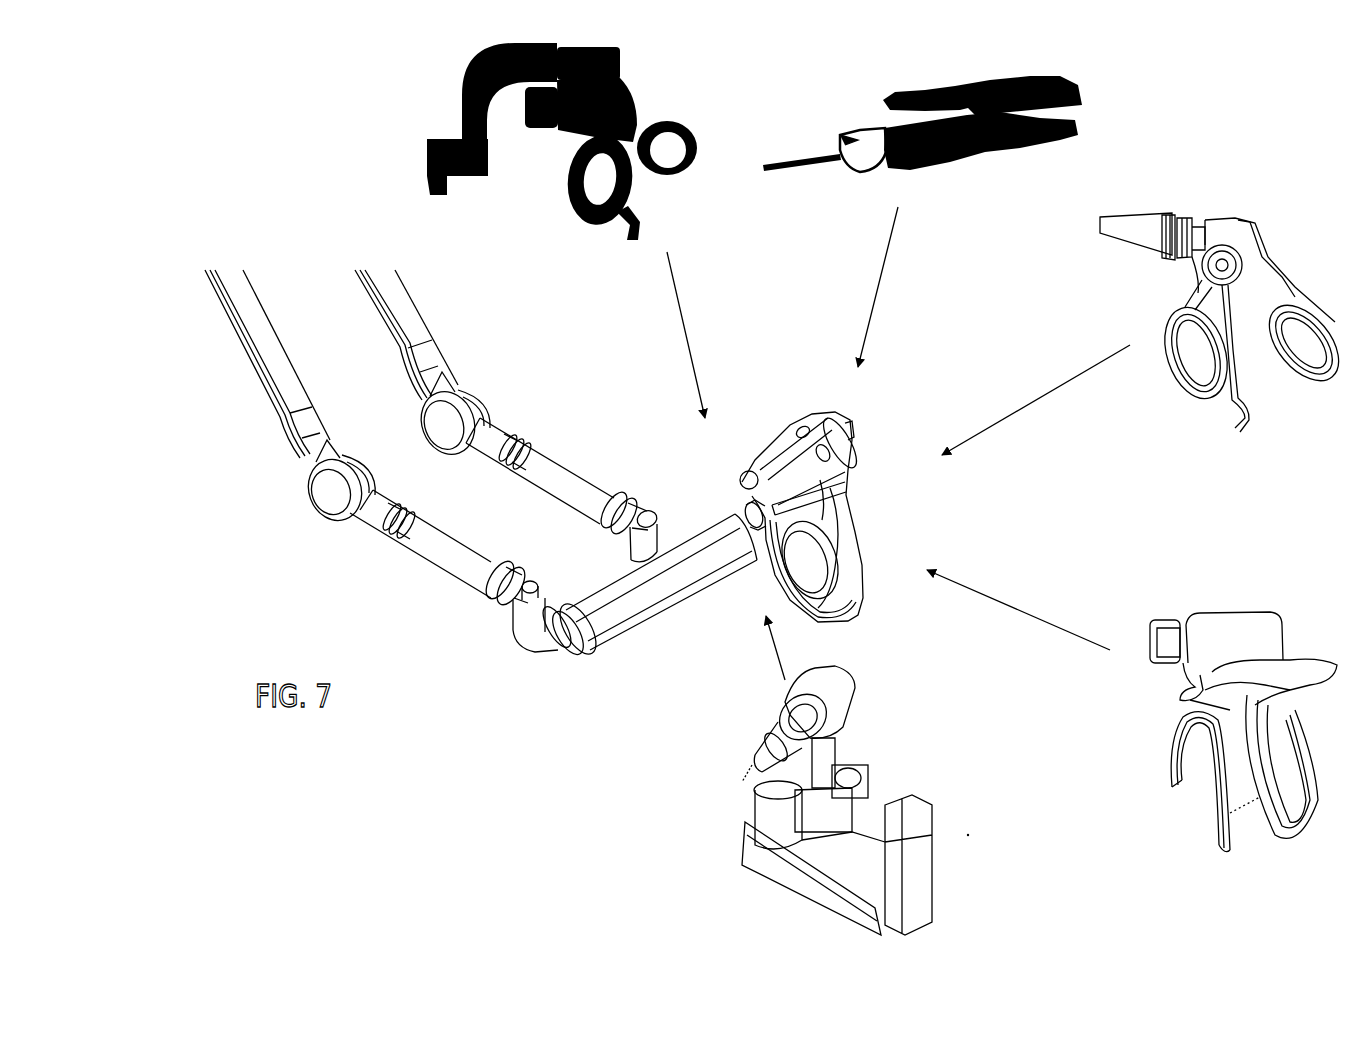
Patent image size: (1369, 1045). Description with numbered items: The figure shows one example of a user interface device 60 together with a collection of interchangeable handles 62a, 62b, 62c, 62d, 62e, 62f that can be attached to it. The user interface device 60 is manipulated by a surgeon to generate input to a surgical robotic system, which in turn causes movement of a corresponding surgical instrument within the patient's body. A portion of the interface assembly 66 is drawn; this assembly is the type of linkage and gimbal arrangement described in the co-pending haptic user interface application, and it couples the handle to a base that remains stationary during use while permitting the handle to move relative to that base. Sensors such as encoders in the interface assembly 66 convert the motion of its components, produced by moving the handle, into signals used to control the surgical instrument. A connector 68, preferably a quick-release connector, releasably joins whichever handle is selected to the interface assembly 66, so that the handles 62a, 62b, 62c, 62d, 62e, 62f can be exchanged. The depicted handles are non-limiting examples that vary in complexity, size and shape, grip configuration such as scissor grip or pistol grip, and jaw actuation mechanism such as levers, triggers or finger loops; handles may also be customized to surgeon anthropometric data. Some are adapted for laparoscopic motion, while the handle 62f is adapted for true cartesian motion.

The user interface device 60 is at (488, 708).
The interface assembly 66 is at (234, 484).
The connector 68 is at (744, 513).
The handle 62a is at (858, 512).
The handle 62b is at (635, 180).
The handle 62c is at (1063, 88).
The handle 62d is at (1236, 226).
The handle 62e is at (1230, 620).
The handle adapted for true cartesian motion 62f is at (842, 682).